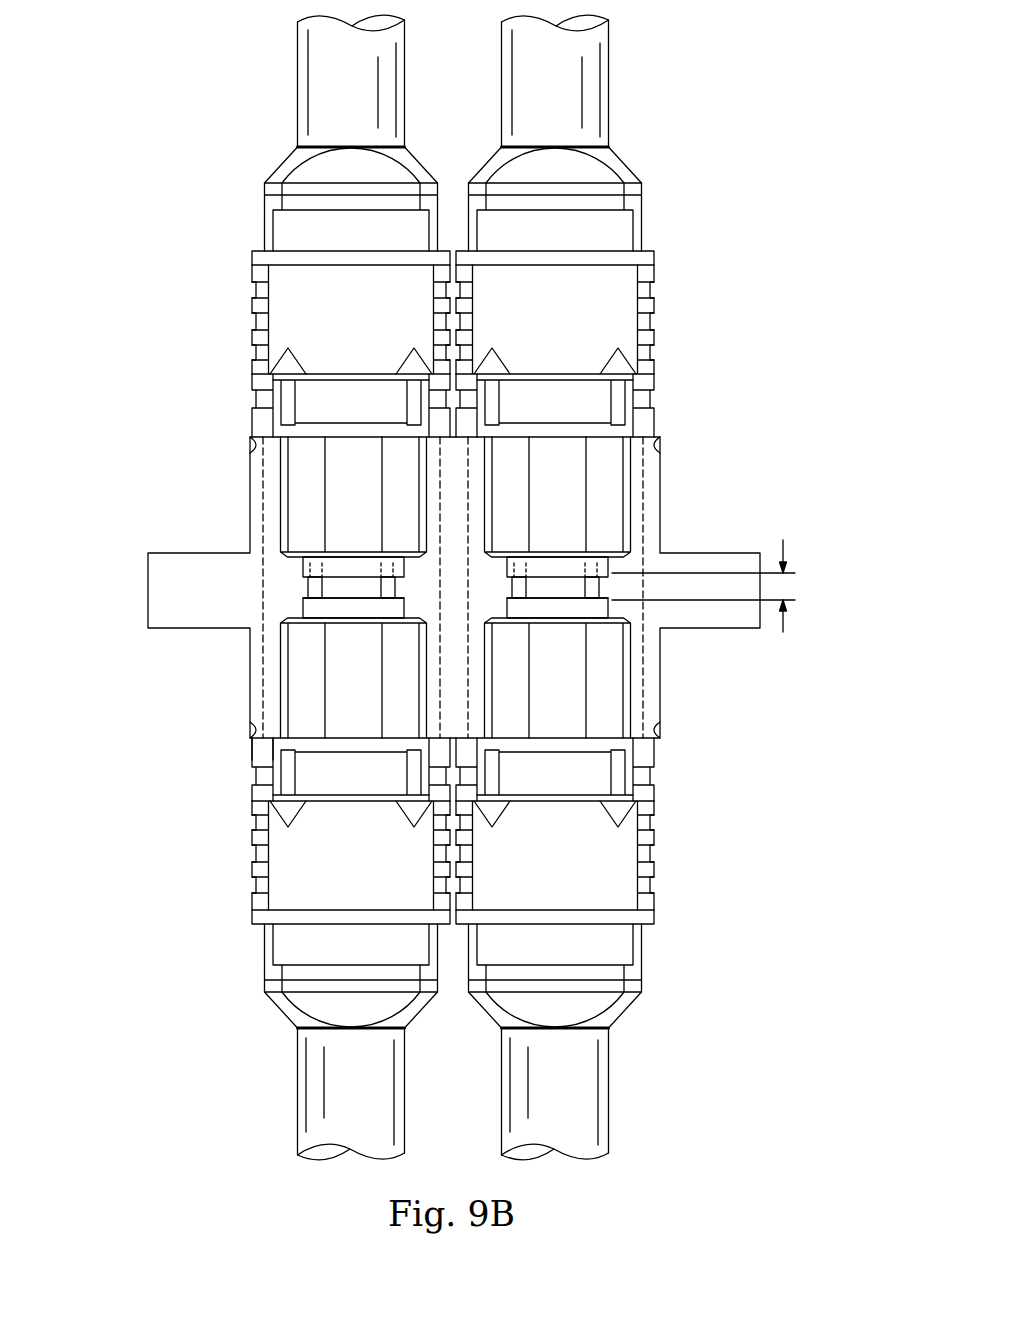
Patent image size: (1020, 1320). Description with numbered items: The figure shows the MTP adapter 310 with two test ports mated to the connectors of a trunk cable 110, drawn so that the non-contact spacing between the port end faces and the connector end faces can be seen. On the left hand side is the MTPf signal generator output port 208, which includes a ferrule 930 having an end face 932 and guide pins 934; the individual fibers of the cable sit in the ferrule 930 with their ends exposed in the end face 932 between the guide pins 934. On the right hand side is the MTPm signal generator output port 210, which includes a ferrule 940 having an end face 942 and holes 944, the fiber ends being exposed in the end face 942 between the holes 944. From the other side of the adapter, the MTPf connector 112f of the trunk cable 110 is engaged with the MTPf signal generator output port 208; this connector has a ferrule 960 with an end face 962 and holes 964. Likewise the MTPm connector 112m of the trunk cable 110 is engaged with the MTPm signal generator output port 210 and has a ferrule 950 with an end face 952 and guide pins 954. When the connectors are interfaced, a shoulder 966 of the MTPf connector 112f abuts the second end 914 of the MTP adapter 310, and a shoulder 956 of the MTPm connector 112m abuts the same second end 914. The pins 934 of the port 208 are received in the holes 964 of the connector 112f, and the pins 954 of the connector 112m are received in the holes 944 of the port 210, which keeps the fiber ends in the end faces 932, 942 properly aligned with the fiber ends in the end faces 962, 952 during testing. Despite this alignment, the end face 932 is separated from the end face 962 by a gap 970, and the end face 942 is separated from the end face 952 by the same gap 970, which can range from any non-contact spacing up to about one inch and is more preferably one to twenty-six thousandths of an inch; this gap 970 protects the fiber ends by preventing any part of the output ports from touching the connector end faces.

The trunk cable 110 is at (265, 1100).
The MTPf connector 112f is at (232, 990).
The MTPm connector 112m is at (674, 990).
The MTPf signal generator output port 208 is at (233, 188).
The MTPm signal generator output port 210 is at (673, 188).
The MTP adapter 310 is at (122, 625).
The second end 914 is at (258, 750).
The ferrule 930 is at (298, 498).
The end face 932 is at (338, 580).
The guide pins 934 is at (307, 590).
The ferrule 940 is at (608, 495).
The end face 942 is at (572, 575).
The holes 944 is at (610, 568).
The ferrule 950 is at (610, 678).
The end face 952 is at (572, 600).
The guide pins 954 is at (603, 583).
The shoulder 956 is at (650, 730).
The ferrule 960 is at (300, 678).
The end face 962 is at (338, 596).
The holes 964 is at (297, 608).
The shoulder 966 is at (258, 732).
The gap 970 is at (783, 550).